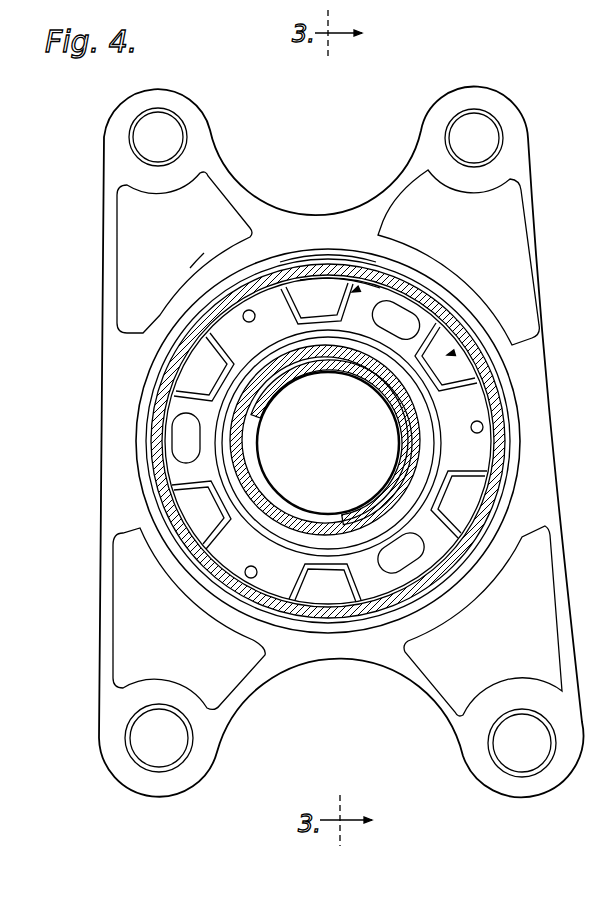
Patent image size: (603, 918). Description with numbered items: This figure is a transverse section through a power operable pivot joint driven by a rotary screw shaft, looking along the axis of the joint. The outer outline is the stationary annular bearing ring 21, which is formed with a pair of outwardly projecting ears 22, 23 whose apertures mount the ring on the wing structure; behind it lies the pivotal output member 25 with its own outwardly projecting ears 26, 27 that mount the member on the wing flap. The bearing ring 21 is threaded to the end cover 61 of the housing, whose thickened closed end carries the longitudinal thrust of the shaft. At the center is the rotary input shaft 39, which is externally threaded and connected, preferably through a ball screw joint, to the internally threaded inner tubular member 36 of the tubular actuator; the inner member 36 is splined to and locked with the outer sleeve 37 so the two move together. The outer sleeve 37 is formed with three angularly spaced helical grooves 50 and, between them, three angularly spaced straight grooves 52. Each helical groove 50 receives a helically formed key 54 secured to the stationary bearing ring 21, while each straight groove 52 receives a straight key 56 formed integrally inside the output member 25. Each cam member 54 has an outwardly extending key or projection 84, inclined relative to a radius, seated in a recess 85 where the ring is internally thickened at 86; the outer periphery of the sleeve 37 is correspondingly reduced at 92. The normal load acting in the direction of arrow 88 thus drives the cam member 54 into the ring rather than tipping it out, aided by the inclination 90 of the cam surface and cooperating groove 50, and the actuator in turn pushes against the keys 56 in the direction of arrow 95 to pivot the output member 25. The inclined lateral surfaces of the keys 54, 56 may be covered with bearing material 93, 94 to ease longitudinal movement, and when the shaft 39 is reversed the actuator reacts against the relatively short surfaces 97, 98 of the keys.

The annular bearing ring 21 is at (299, 219).
The ear 22 is at (178, 101).
The ear 23 is at (487, 99).
The pivotal output member 25 is at (312, 662).
The ear 26 is at (138, 782).
The ear 27 is at (502, 794).
The inner tubular member 36 is at (254, 440).
The outer sleeve 37 is at (472, 328).
The rotary input shaft 39 is at (277, 491).
The helical groove 50 is at (362, 272).
The straight groove 52 is at (190, 397).
The helical key 54 is at (188, 497).
The straight key 56 is at (200, 360).
The end cover 61 is at (222, 302).
The key projection 84 is at (337, 290).
The recess 85 is at (309, 275).
The internally thickened portion 86 is at (268, 285).
The arrow 88 is at (352, 292).
The inclined surface 90 is at (366, 312).
The reduced periphery 92 is at (240, 312).
The bearing material 93 is at (185, 405).
The bearing material 94 is at (182, 474).
The arrow 95 is at (447, 355).
The short surface 97 is at (283, 316).
The short surface 98 is at (196, 262).